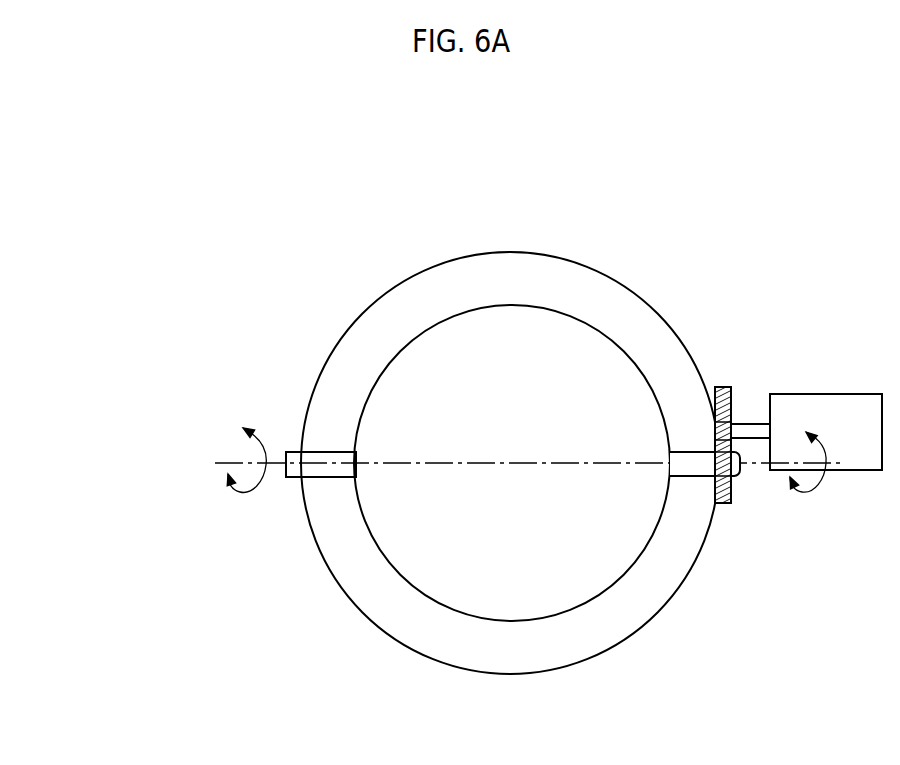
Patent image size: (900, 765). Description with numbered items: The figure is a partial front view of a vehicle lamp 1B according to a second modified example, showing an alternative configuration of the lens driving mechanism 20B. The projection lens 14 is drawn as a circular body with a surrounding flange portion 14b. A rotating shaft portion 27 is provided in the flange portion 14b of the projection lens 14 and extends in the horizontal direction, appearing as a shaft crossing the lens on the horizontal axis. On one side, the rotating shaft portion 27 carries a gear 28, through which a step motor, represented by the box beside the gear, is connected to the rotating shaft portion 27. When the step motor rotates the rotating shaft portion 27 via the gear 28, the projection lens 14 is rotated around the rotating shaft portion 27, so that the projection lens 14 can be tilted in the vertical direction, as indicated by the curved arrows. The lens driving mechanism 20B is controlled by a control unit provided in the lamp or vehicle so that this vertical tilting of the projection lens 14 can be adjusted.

The vehicle lamp 1B is at (626, 219).
The projection lens 14 is at (398, 280).
The flange portion 14b is at (641, 326).
The lens driving mechanism 20B is at (352, 643).
The rotating shaft portion 27 is at (690, 479).
The gear 28 is at (727, 410).